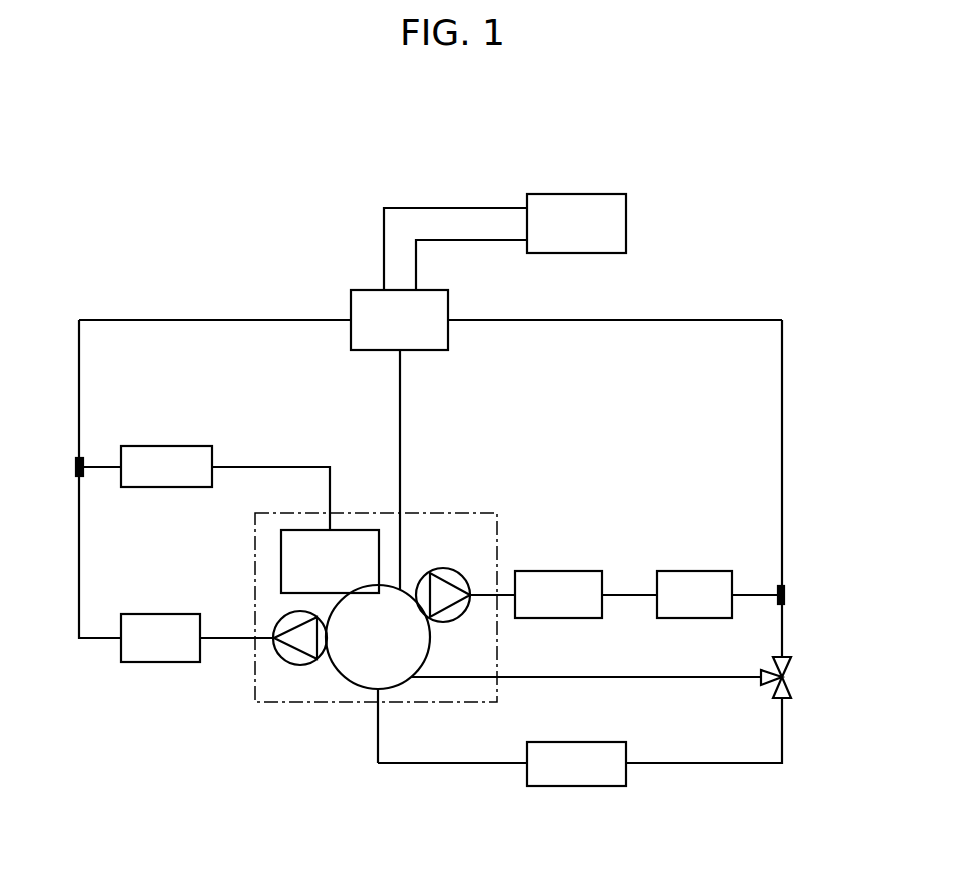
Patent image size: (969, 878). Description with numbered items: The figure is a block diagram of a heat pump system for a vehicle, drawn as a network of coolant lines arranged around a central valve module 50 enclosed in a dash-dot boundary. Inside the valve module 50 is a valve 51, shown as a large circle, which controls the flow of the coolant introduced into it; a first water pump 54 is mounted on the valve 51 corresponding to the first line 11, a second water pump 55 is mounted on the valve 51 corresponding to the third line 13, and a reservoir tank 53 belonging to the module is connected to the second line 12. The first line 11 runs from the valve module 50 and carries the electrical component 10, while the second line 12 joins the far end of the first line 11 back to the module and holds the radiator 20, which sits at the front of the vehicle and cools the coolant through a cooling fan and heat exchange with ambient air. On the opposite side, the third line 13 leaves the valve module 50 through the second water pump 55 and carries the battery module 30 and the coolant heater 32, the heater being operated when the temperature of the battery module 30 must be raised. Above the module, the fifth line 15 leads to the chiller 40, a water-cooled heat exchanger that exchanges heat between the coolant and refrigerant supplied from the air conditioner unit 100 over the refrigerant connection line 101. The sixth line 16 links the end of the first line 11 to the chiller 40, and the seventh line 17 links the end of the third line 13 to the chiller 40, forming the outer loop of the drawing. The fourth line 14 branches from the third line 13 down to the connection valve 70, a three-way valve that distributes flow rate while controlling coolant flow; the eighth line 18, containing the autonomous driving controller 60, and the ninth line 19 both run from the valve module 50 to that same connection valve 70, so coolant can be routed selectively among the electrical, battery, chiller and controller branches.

The electrical component 10 is at (140, 662).
The first line 11 is at (79, 553).
The second line 12 is at (257, 467).
The third line 13 is at (622, 595).
The fourth line 14 is at (782, 639).
The fifth line 15 is at (400, 444).
The sixth line 16 is at (166, 320).
The seventh line 17 is at (782, 441).
The eighth line 18 is at (782, 740).
The ninth line 19 is at (668, 677).
The radiator 20 is at (172, 446).
The battery module 30 is at (544, 571).
The coolant heater 32 is at (677, 571).
The chiller 40 is at (363, 350).
The valve module 50 is at (255, 684).
The valve 51 is at (348, 680).
The reservoir tank 53 is at (281, 563).
The first water pump 54 is at (295, 665).
The second water pump 55 is at (440, 572).
The autonomous driving controller 60 is at (551, 786).
The connection valve 70 is at (773, 662).
The air conditioner unit 100 is at (626, 237).
The refrigerant connection line 101 is at (440, 240).